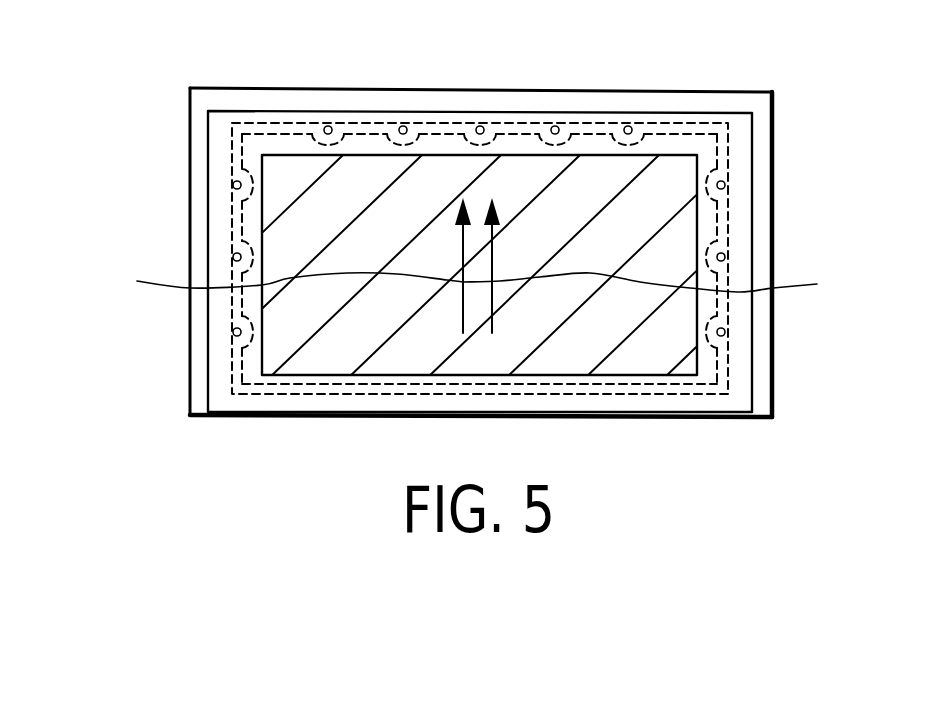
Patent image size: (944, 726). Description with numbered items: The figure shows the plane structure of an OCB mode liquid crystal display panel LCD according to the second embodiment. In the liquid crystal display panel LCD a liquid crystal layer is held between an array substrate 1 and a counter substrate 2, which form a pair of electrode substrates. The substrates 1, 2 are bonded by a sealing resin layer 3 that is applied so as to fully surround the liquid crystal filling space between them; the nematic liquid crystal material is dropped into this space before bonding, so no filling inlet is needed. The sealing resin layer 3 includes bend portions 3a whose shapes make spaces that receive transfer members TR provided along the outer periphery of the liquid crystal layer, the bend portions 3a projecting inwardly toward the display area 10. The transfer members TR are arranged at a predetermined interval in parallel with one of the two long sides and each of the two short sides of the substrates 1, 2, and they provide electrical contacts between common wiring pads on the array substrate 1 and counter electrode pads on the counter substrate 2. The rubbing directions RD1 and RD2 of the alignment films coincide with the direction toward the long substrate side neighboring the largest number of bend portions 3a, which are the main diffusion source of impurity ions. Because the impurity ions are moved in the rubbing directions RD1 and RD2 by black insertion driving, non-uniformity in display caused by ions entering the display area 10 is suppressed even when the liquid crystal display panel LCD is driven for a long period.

The liquid crystal display panel LCD is at (172, 118).
The array substrate 1 is at (773, 112).
The counter substrate 2 is at (752, 177).
The sealing resin layer 3 is at (727, 365).
The bend portions 3a is at (480, 126).
The transfer members TR is at (402, 126).
The display area 10 is at (592, 155).
The rubbing direction RD1 is at (273, 280).
The rubbing direction RD2 is at (668, 286).